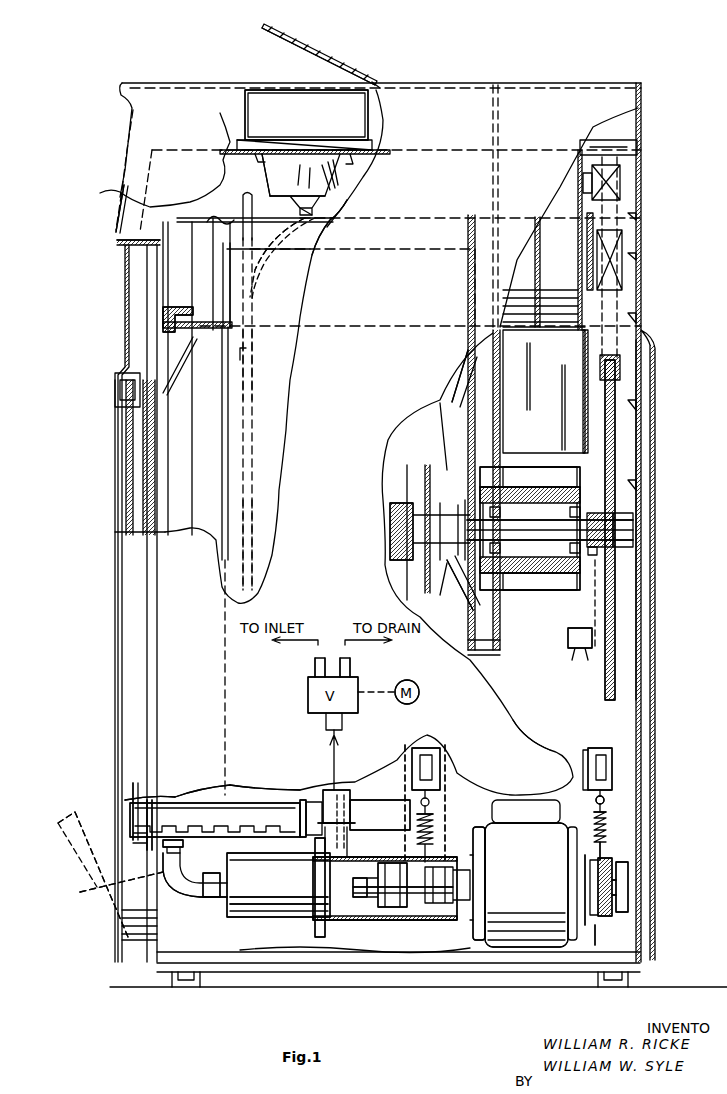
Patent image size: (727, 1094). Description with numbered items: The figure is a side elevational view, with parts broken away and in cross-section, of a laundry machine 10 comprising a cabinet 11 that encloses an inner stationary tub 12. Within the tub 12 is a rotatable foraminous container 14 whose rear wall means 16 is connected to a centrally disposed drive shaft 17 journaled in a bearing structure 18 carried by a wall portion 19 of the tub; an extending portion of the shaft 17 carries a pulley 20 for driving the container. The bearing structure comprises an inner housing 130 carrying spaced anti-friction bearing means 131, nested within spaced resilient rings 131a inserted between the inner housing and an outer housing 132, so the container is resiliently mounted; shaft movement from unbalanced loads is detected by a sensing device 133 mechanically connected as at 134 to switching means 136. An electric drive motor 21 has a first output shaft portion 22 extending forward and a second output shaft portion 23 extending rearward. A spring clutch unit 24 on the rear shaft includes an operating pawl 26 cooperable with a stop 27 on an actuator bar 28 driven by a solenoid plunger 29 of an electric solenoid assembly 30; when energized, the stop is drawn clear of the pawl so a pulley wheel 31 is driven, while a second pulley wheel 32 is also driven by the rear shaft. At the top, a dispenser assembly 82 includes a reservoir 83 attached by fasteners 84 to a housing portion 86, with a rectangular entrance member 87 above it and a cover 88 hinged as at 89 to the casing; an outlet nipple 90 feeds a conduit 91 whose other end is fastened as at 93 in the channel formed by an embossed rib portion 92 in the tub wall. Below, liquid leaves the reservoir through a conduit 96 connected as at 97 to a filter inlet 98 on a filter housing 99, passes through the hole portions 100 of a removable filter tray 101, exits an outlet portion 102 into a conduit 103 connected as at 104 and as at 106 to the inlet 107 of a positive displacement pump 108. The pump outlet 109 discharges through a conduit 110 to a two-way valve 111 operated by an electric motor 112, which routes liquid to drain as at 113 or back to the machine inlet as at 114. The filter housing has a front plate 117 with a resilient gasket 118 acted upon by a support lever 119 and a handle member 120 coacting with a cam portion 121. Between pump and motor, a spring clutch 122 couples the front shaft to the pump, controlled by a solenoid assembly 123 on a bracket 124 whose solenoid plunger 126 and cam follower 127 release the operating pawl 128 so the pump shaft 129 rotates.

The laundry machine 10 is at (66, 121).
The cabinet 11 is at (100, 193).
The stationary tub 12 is at (127, 233).
The container 14 is at (215, 282).
The rear wall means 16 is at (485, 625).
The drive shaft 17 is at (455, 518).
The bearing structure 18 is at (594, 481).
The wall portion 19 is at (505, 650).
The pulley 20 is at (615, 490).
The electric drive motor 21 is at (495, 925).
The first output shaft portion 22 is at (420, 905).
The second output shaft portion 23 is at (585, 925).
The spring clutch unit 24 is at (600, 890).
The operating pawl 26 is at (600, 925).
The stop 27 is at (608, 852).
The actuator bar 28 is at (605, 805).
The solenoid plunger 29 is at (605, 790).
The electric solenoid assembly 30 is at (612, 752).
The pulley wheel 31 is at (640, 862).
The second pulley wheel 32 is at (645, 883).
The dispenser assembly 82 is at (357, 190).
The reservoir 83 is at (270, 172).
The fasteners 84 is at (325, 208).
The housing portion 86 is at (228, 150).
The entrance member 87 is at (370, 115).
The cover 88 is at (318, 62).
The hinge 89 is at (380, 85).
The outlet nipple 90 is at (332, 215).
The conduit 91 is at (290, 241).
The embossed rib portion 92 is at (252, 550).
The fastening point 93 is at (250, 340).
The conduit 96 is at (372, 800).
The connection 97 is at (310, 800).
The filter inlet 98 is at (335, 790).
The filter housing 99 is at (260, 788).
The hole portions 100 is at (368, 887).
The removable filter tray 101 is at (203, 808).
The outlet portion 102 is at (106, 886).
The conduit 103 is at (190, 890).
The connection 104 is at (180, 850).
The connection 106 is at (215, 897).
The pump inlet 107 is at (242, 857).
The positive displacement pump 108 is at (279, 894).
The pump outlet 109 is at (335, 875).
The discharge conduit 110 is at (348, 836).
The two-way valve 111 is at (355, 700).
The electric motor 112 is at (420, 690).
The drain discharge 113 is at (365, 660).
The machine inlet conduit 114 is at (313, 660).
The front plate 117 is at (130, 790).
The resilient gasket 118 is at (183, 765).
The support lever 119 is at (137, 815).
The handle member 120 is at (135, 830).
The cam portion 121 is at (140, 847).
The spring clutch 122 is at (405, 893).
The solenoid assembly 123 is at (428, 747).
The bracket 124 is at (462, 790).
The solenoid plunger 126 is at (470, 795).
The cam follower 127 is at (412, 816).
The operating pawl 128 is at (495, 870).
The pump shaft 129 is at (372, 910).
The inner housing 130 is at (535, 537).
The anti-friction bearing means 131 is at (530, 510).
The resilient rings 131a is at (500, 470).
The outer housing 132 is at (540, 580).
The sensing device 133 is at (600, 553).
The mechanical connection 134 is at (625, 590).
The switching means 136 is at (585, 660).